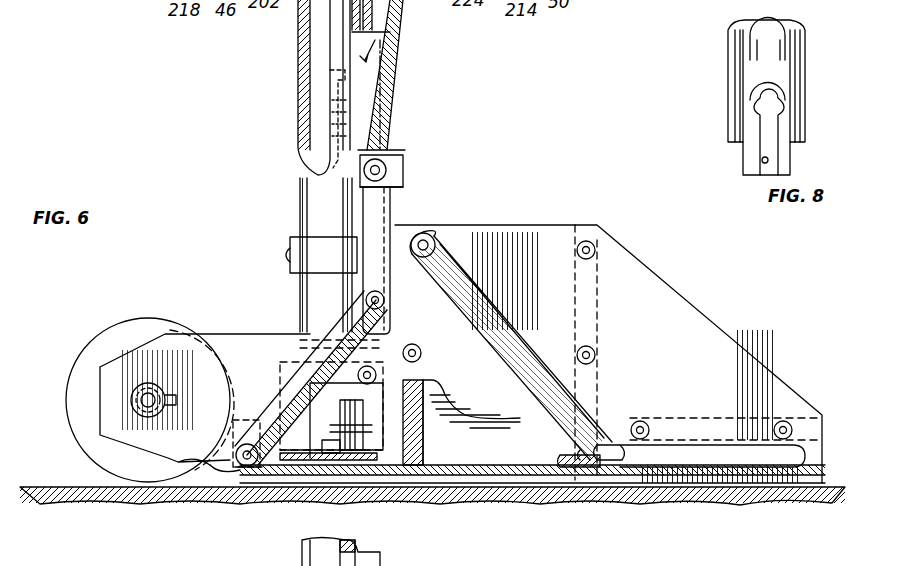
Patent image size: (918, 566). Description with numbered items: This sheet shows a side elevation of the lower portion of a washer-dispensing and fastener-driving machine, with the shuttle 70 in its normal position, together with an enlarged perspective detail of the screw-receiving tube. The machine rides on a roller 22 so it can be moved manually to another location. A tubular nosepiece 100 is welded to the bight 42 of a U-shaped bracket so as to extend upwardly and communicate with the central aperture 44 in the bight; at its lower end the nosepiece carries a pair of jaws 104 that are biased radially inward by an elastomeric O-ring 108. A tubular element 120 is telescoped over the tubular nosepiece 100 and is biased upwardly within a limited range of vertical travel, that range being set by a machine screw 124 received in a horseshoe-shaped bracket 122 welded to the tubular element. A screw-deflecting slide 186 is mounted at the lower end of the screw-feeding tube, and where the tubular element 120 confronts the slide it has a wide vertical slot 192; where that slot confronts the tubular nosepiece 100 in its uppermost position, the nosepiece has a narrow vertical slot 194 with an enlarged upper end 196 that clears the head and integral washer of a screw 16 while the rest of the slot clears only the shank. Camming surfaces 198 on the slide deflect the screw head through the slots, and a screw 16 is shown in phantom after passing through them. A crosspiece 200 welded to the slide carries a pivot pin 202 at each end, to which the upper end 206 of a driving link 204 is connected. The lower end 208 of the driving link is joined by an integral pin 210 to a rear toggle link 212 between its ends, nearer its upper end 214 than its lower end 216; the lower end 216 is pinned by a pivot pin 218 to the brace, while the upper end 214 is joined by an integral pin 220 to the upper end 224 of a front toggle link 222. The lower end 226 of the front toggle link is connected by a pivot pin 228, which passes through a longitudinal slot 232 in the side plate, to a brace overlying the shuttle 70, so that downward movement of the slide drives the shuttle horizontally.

In FIG. 6, the screw 16 is at (330, 93).
In FIG. 6, the roller 22 is at (135, 330).
In FIG. 6, the bight 42 is at (293, 472).
In FIG. 6, the central aperture 44 is at (330, 445).
In FIG. 6, the shuttle 70 is at (465, 475).
In FIG. 6, the tubular nosepiece 100 is at (317, 312).
In FIG. 8, the tubular nosepiece 100 is at (745, 160).
In FIG. 6, the jaws 104 is at (332, 447).
In FIG. 6, the elastomeric O-ring 108 is at (345, 473).
In FIG. 6, the tubular element 120 is at (303, 188).
In FIG. 6, the horseshoe-shaped bracket 122 is at (285, 262).
In FIG. 6, the machine screw 124 is at (290, 252).
In FIG. 6, the screw-deflecting slide 186 is at (400, 52).
In FIG. 6, the vertical slot 192 is at (300, 44).
In FIG. 8, the vertical slot 192 is at (760, 52).
In FIG. 8, the vertical slot 194 is at (764, 160).
In FIG. 8, the enlarged upper end 196 is at (780, 105).
In FIG. 6, the camming surfaces 198 is at (370, 60).
In FIG. 6, the crosspiece 200 is at (398, 160).
In FIG. 6, the pivot pin 202 is at (398, 178).
In FIG. 6, the driving link 204 is at (400, 195).
In FIG. 6, the upper end 206 is at (392, 150).
In FIG. 6, the lower end 208 is at (313, 313).
In FIG. 6, the integral pin 210 is at (305, 285).
In FIG. 6, the rear toggle link 212 is at (297, 363).
In FIG. 6, the upper end 214 is at (440, 220).
In FIG. 6, the lower end 216 is at (252, 476).
In FIG. 6, the pivot pin 218 is at (228, 470).
In FIG. 6, the integral pin 220 is at (425, 233).
In FIG. 6, the front toggle link 222 is at (500, 333).
In FIG. 6, the upper end 224 is at (470, 226).
In FIG. 6, the lower end 226 is at (623, 450).
In FIG. 6, the pivot pin 228 is at (580, 450).
In FIG. 6, the longitudinal slot 232 is at (705, 445).